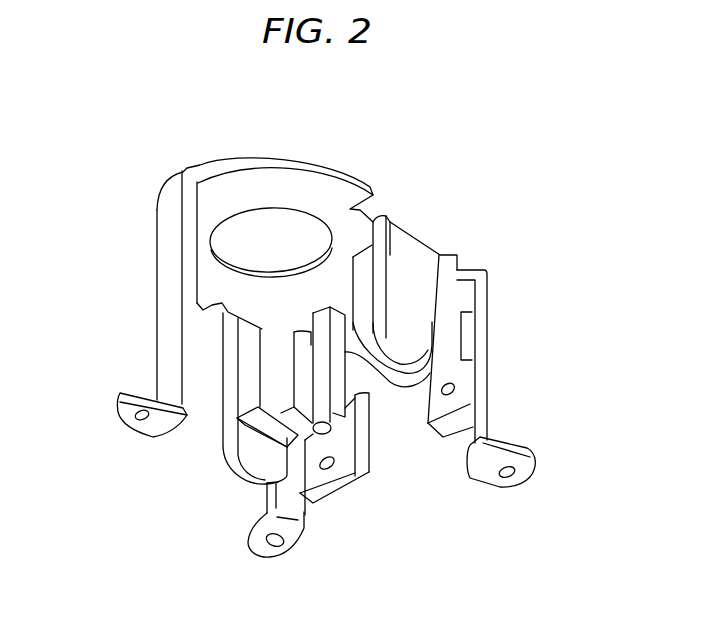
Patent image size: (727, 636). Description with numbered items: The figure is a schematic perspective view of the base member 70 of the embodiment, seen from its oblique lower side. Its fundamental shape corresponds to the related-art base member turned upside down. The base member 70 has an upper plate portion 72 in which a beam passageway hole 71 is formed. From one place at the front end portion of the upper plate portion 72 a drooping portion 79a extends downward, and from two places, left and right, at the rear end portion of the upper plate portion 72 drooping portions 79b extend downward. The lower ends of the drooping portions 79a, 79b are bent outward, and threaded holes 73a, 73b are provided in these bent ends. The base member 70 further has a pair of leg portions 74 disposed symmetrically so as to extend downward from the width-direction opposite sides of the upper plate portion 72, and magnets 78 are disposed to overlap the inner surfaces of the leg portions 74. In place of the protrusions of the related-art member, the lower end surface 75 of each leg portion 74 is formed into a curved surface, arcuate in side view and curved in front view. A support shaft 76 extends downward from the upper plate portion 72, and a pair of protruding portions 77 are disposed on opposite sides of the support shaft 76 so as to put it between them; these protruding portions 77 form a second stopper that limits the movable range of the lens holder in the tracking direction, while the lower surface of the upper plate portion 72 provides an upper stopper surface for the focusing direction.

The base member 70 is at (512, 210).
The beam passageway hole 71 is at (253, 226).
The upper plate portion 72 is at (328, 196).
The threaded hole 73a is at (140, 418).
The threaded hole 73b is at (507, 478).
The leg portion 74 is at (418, 262).
The lower end surface 75 is at (233, 472).
The support shaft 76 is at (350, 465).
The protruding portion 77 is at (282, 367).
The magnet 78 is at (365, 267).
The drooping portion 79a is at (157, 262).
The drooping portion 79b is at (487, 338).